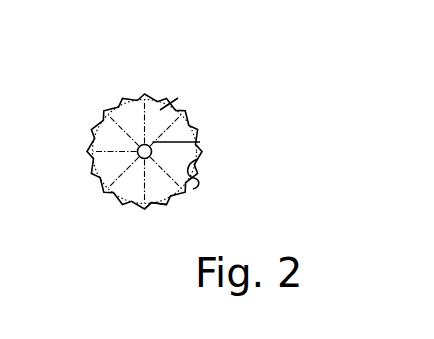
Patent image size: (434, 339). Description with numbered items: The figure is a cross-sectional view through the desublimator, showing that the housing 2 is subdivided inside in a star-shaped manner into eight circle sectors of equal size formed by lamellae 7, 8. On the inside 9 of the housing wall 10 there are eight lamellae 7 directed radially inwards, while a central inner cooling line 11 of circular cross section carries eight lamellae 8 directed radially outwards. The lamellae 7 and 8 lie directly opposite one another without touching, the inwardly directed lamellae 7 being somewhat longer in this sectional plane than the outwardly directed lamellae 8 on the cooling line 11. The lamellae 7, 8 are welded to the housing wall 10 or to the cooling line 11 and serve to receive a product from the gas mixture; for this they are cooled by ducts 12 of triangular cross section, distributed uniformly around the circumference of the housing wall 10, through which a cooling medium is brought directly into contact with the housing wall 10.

The housing 2 is at (113, 208).
The lamellae directed radially inwards 7 is at (171, 113).
The lamellae directed radially outwards 8 is at (200, 142).
The inside of the housing wall 9 is at (193, 189).
The housing wall 10 is at (157, 207).
The central inner cooling line 11 is at (138, 155).
The ducts 12 is at (101, 108).